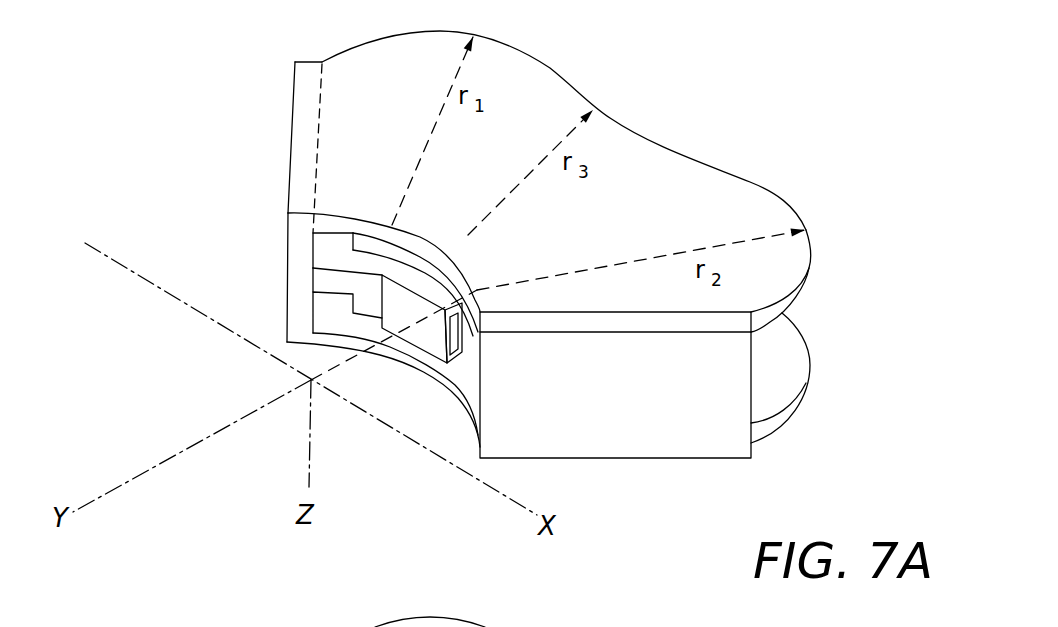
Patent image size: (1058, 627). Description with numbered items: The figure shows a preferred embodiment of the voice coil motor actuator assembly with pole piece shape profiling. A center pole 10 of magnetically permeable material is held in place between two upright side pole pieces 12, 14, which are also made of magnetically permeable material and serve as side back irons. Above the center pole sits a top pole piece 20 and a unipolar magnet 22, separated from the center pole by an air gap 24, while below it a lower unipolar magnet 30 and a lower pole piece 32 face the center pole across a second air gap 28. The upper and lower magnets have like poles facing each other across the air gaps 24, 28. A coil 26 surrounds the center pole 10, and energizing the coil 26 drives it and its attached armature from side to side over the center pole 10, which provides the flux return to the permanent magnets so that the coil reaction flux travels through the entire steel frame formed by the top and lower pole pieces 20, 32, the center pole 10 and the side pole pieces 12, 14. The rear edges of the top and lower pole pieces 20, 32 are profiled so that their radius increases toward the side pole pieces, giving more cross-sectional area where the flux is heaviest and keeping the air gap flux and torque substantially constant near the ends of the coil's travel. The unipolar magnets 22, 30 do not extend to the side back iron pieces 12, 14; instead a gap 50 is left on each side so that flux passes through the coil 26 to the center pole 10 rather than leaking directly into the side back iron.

The center pole 10 is at (330, 283).
The upright pole piece 12 is at (261, 147).
The upright pole piece 14 is at (617, 410).
The top pole piece 20 is at (352, 193).
The unipolar magnet 22 is at (549, 183).
The air gap 24 is at (325, 253).
The coil 26 is at (383, 399).
The second air gap 28 is at (330, 318).
The lower unipolar magnet 30 is at (422, 399).
The lower pole piece 32 is at (391, 336).
The gap 50 is at (368, 201).